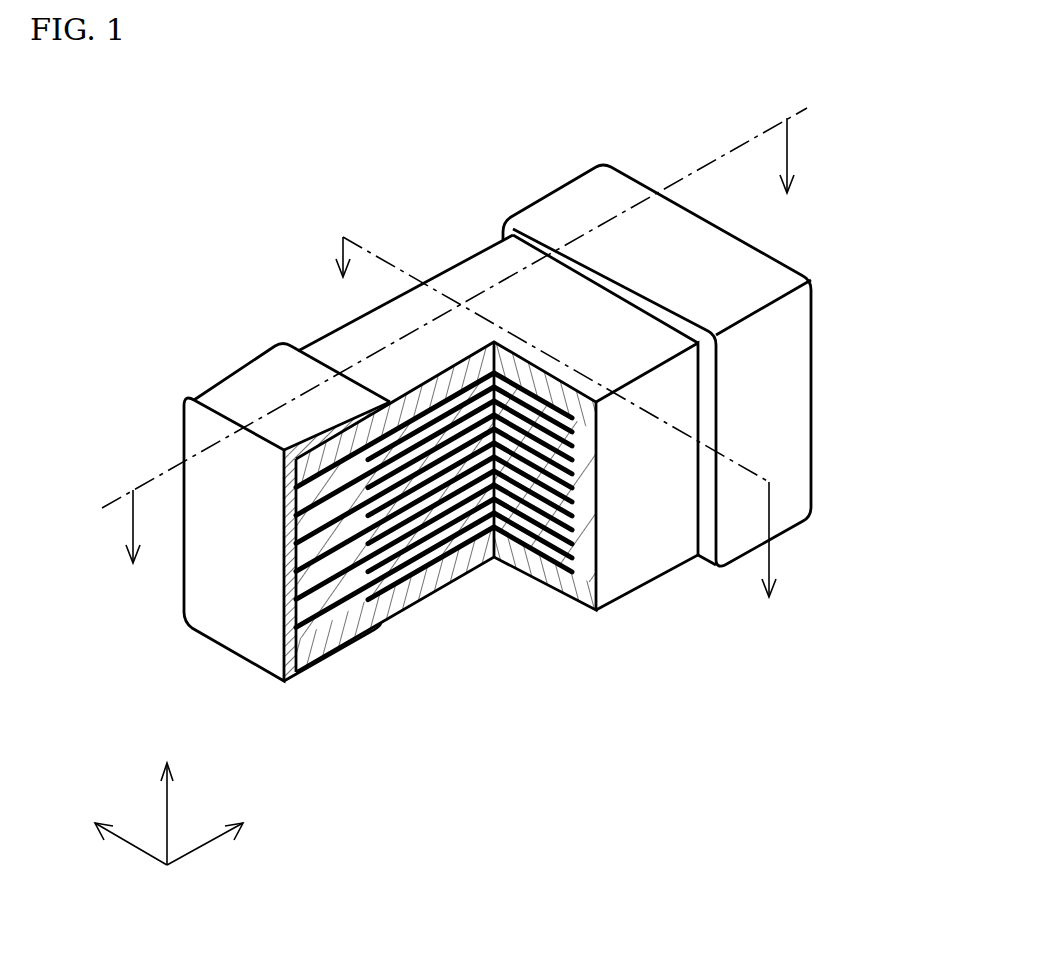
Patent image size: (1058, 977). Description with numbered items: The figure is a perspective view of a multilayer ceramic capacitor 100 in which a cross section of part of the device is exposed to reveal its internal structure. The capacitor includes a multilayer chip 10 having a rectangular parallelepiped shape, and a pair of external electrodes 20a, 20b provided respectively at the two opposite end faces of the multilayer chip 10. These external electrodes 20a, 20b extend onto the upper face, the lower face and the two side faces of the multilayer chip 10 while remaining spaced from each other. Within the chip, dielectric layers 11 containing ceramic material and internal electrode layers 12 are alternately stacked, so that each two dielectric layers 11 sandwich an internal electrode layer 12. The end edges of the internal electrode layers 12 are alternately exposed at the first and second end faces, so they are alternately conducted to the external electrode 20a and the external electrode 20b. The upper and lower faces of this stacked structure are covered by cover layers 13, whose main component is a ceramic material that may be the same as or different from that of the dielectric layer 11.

The multilayer ceramic capacitor 100 is at (918, 92).
The multilayer chip 10 is at (330, 337).
The dielectric layer 11 is at (447, 583).
The internal electrode layer 12 is at (483, 547).
The cover layer 13 is at (463, 280).
The external electrode 20a is at (212, 378).
The external electrode 20b is at (553, 203).